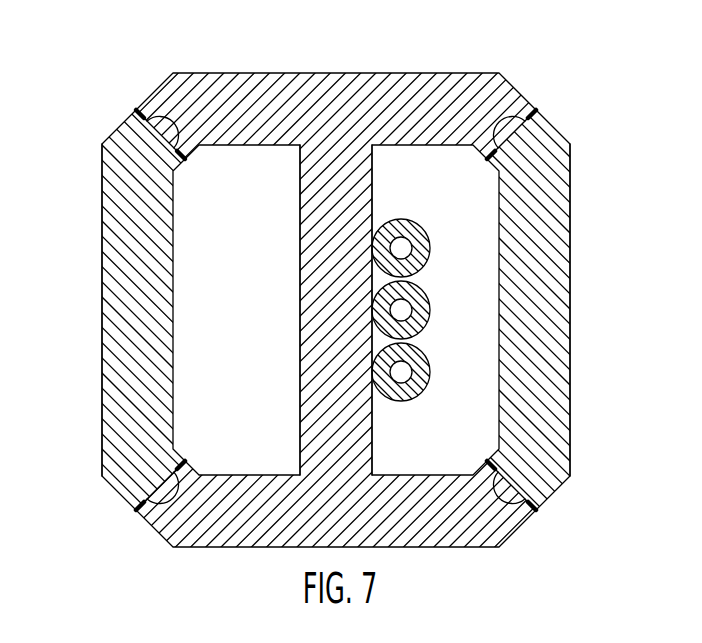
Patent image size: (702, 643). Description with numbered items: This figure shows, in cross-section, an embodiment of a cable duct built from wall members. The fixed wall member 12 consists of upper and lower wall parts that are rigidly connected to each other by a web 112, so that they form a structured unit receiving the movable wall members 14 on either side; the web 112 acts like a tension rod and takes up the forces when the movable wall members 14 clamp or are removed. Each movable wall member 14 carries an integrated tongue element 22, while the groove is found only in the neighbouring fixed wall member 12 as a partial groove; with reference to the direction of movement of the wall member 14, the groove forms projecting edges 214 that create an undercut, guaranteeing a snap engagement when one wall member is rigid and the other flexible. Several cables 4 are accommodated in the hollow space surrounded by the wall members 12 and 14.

The fixed wall member 12 is at (237, 88).
The moveable wall member 14 is at (108, 273).
The web 112 is at (300, 274).
The cables 4 is at (430, 372).
The projecting edges 214 is at (522, 112).
The tongue element 22 is at (505, 128).